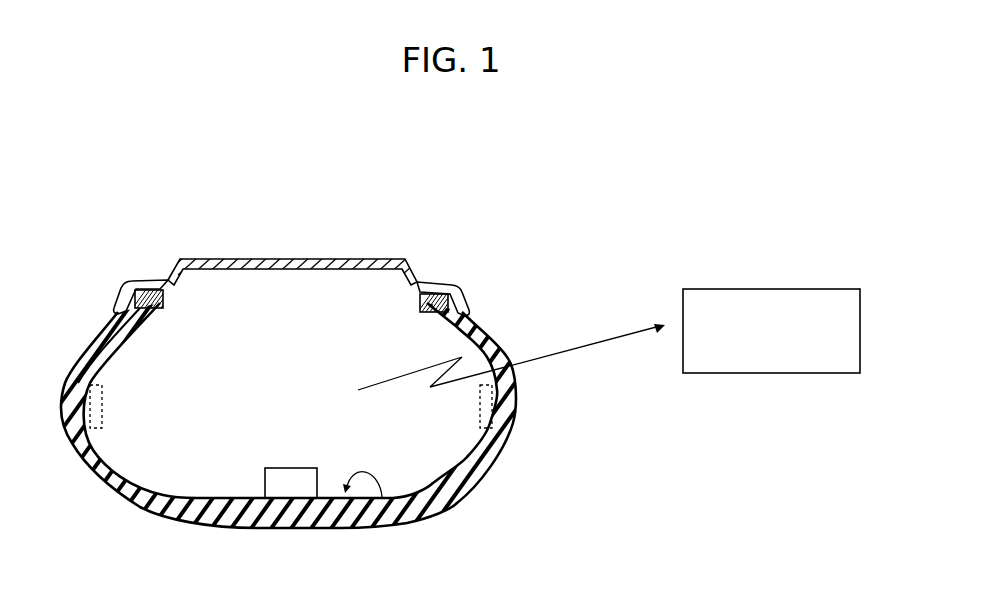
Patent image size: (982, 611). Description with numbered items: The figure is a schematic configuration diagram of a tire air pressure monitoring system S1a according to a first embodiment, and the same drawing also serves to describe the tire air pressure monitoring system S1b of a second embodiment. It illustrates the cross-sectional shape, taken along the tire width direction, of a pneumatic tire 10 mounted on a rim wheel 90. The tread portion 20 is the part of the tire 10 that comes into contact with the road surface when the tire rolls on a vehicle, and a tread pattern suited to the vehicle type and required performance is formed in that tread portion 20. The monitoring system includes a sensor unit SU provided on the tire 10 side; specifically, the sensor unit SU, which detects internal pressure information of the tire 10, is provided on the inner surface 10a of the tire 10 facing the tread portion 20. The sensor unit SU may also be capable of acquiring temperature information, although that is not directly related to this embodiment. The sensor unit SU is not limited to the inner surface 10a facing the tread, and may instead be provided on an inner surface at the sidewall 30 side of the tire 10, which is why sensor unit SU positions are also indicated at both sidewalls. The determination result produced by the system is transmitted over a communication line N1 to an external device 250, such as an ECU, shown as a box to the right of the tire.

The pneumatic tire 10 is at (486, 326).
The inner surface 10a is at (383, 498).
The tread portion 20 is at (296, 530).
The sidewall 30 is at (518, 398).
The rim wheel 90 is at (369, 258).
The external device 250 is at (794, 289).
The communication line N1 is at (511, 347).
The tire air pressure monitoring system S1a is at (746, 144).
The tire air pressure monitoring system S1b is at (673, 183).
The sensor unit SU is at (292, 467).